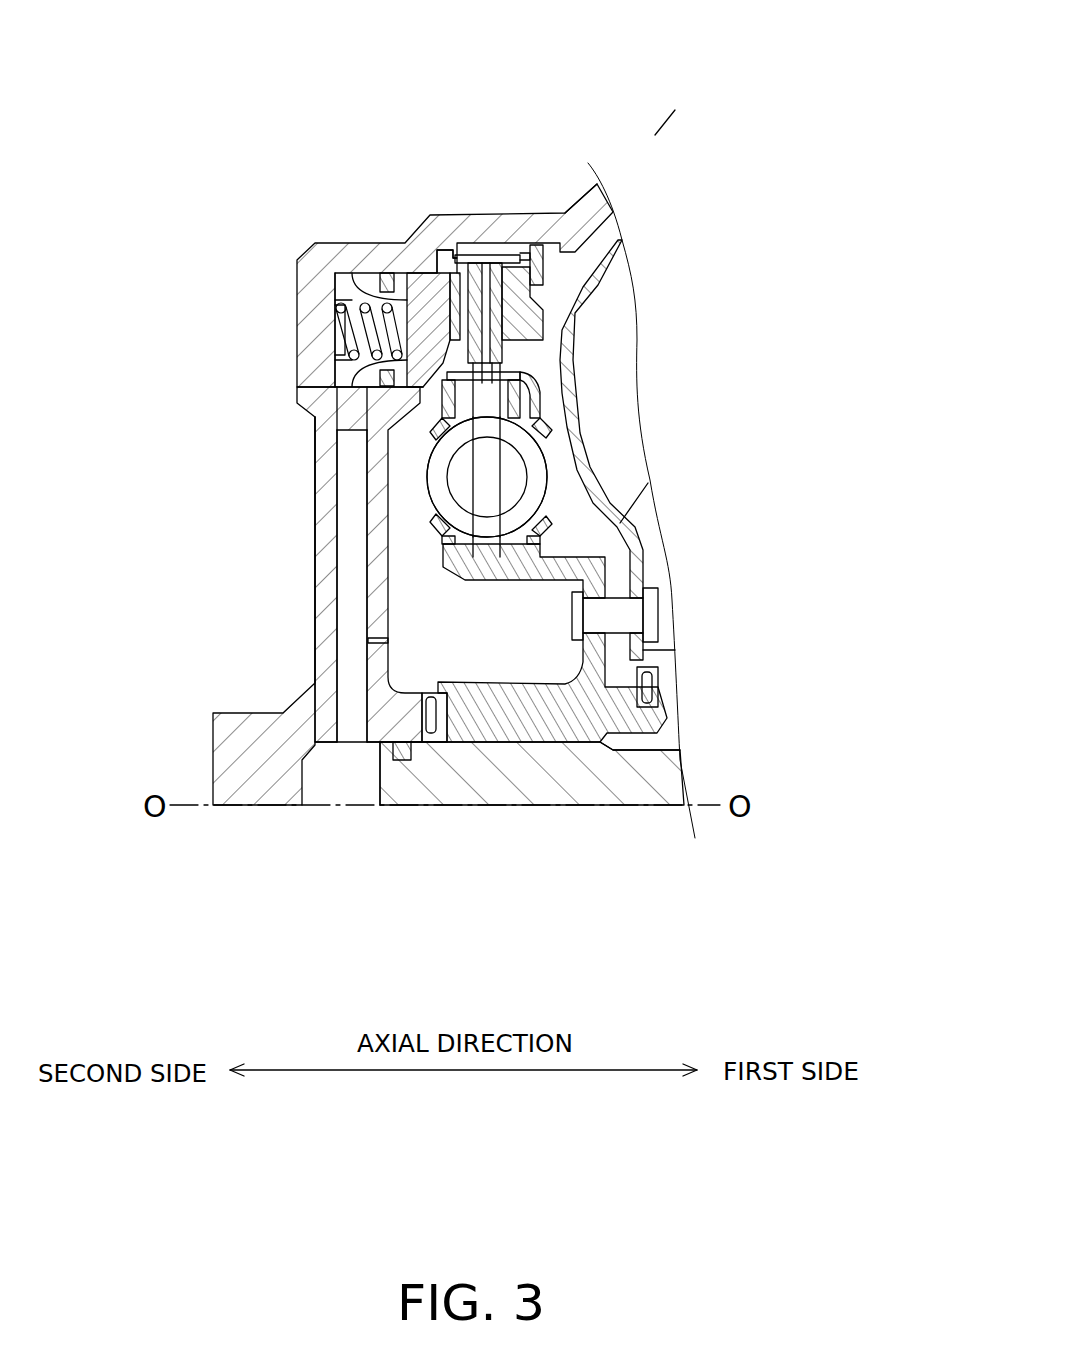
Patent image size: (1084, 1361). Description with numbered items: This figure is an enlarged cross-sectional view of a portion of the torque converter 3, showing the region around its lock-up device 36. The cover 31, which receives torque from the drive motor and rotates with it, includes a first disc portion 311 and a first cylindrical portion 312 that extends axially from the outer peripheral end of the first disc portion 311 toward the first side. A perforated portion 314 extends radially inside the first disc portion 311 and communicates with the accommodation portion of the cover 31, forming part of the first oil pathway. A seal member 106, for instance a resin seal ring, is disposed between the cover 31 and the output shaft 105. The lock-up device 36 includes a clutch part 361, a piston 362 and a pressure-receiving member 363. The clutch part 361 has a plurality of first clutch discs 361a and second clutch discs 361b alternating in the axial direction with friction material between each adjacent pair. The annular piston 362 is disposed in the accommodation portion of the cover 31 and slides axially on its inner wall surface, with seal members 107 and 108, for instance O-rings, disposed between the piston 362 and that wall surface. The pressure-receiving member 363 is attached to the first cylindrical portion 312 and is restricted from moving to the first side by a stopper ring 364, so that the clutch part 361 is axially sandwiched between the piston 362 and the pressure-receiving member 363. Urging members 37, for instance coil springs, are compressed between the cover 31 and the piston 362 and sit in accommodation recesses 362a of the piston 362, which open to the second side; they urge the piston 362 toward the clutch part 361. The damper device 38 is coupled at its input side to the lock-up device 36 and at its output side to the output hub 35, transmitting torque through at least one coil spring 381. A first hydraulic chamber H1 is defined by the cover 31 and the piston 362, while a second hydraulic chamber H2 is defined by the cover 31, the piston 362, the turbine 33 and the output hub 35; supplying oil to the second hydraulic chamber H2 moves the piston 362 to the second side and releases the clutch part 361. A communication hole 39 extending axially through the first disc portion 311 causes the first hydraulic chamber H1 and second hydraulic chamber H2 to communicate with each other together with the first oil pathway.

The torque converter 3 is at (642, 142).
The cover 31 is at (290, 396).
The first disc portion 311 is at (328, 562).
The first cylindrical portion 312 is at (530, 223).
The perforated portion 314 is at (367, 707).
The turbine 33 is at (652, 333).
The output hub 35 is at (492, 748).
The lock-up device 36 is at (408, 260).
The clutch part 361 is at (474, 250).
The first clutch disc 361a is at (455, 273).
The second clutch disc 361b is at (483, 250).
The piston 362 is at (367, 270).
The accommodation recess 362a is at (338, 337).
The pressure-receiving member 363 is at (544, 310).
The stopper ring 364 is at (545, 266).
The urging member 37 is at (338, 300).
The damper device 38 is at (413, 497).
The coil spring 381 is at (430, 477).
The communication hole 39 is at (380, 638).
The output shaft 105 is at (573, 783).
The seal member 106 is at (402, 762).
The seal member 107 is at (378, 378).
The seal member 108 is at (384, 273).
The first hydraulic chamber H1 is at (340, 320).
The second hydraulic chamber H2 is at (445, 630).